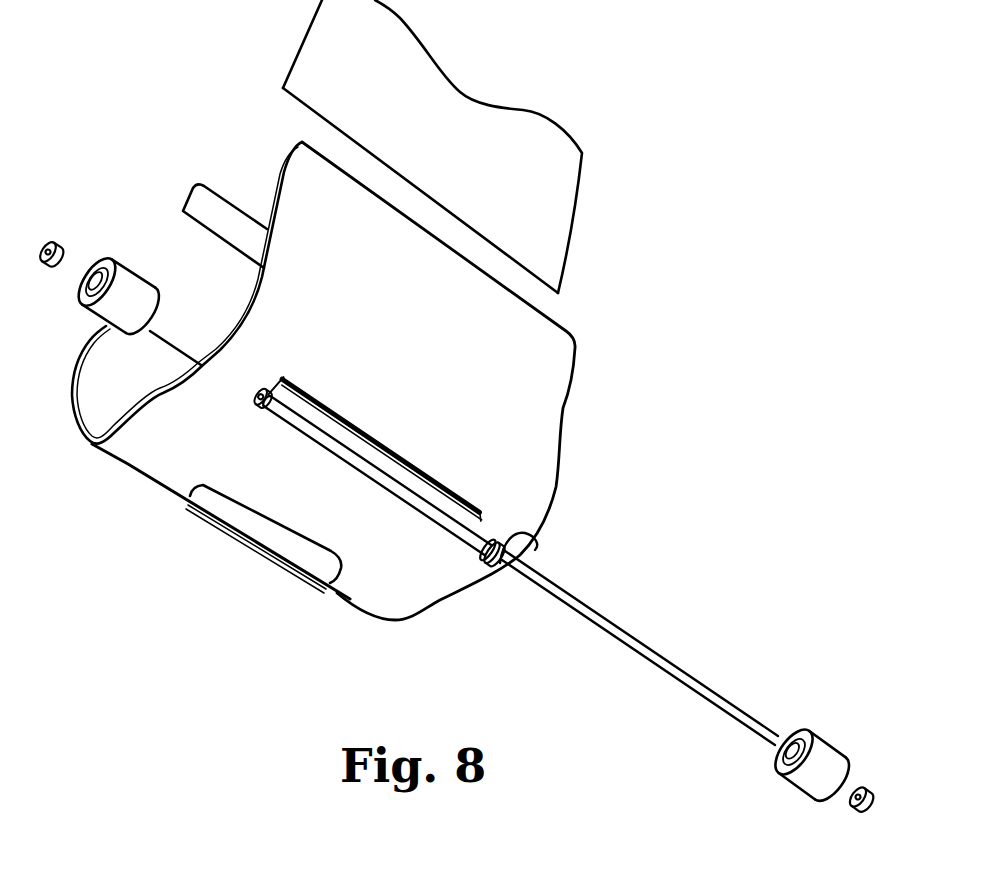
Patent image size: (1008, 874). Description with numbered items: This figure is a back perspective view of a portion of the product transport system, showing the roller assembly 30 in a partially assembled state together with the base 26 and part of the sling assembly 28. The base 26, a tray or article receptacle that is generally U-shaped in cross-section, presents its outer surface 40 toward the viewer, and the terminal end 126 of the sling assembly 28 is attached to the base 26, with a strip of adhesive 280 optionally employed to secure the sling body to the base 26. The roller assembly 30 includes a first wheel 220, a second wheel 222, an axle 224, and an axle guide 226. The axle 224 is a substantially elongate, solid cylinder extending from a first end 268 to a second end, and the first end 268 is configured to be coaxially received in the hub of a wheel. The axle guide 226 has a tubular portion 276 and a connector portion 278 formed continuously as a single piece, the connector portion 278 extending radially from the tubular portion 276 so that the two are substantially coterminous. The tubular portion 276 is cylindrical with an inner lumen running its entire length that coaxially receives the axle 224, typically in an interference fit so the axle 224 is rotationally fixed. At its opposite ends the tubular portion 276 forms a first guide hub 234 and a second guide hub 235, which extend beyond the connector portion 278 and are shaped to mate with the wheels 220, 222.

The base 26 is at (261, 191).
The sling assembly 28 is at (284, 37).
The roller assembly 30 is at (498, 630).
The outer surface 40 is at (381, 313).
The terminal end 126 is at (312, 113).
The first wheel 220 is at (133, 268).
The second wheel 222 is at (836, 739).
The axle 224 is at (633, 654).
The axle guide 226 is at (338, 476).
The first guide hub 234 is at (264, 412).
The second guide hub 235 is at (496, 530).
The first end 268 is at (535, 538).
The tubular portion 276 is at (428, 511).
The connector portion 278 is at (402, 467).
The strip of adhesive 280 is at (193, 207).